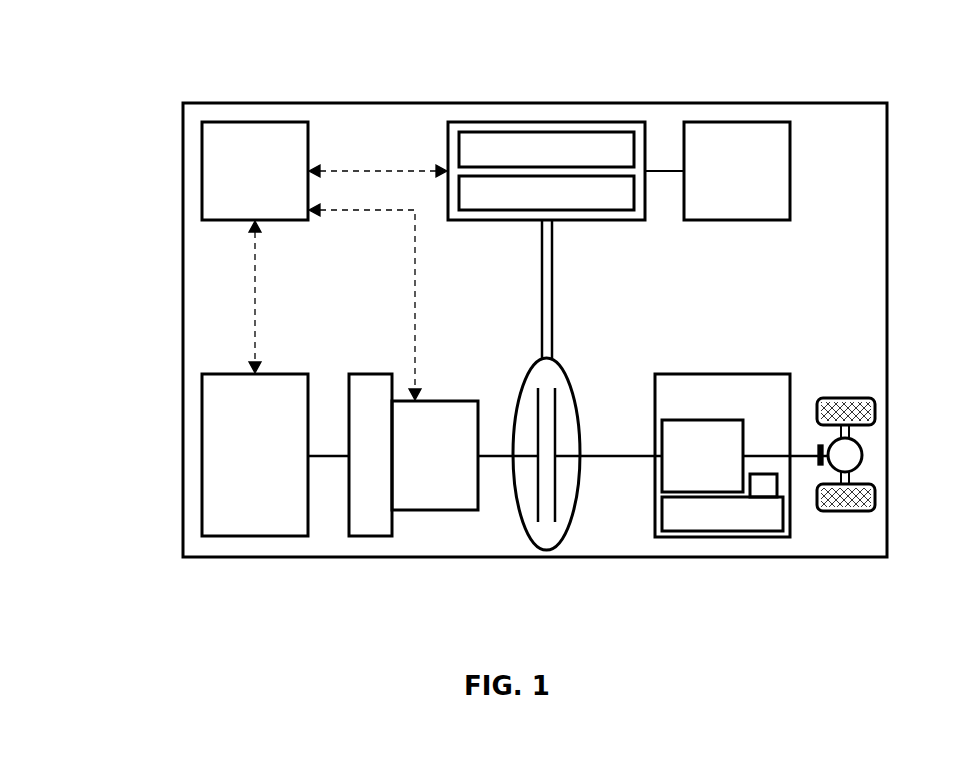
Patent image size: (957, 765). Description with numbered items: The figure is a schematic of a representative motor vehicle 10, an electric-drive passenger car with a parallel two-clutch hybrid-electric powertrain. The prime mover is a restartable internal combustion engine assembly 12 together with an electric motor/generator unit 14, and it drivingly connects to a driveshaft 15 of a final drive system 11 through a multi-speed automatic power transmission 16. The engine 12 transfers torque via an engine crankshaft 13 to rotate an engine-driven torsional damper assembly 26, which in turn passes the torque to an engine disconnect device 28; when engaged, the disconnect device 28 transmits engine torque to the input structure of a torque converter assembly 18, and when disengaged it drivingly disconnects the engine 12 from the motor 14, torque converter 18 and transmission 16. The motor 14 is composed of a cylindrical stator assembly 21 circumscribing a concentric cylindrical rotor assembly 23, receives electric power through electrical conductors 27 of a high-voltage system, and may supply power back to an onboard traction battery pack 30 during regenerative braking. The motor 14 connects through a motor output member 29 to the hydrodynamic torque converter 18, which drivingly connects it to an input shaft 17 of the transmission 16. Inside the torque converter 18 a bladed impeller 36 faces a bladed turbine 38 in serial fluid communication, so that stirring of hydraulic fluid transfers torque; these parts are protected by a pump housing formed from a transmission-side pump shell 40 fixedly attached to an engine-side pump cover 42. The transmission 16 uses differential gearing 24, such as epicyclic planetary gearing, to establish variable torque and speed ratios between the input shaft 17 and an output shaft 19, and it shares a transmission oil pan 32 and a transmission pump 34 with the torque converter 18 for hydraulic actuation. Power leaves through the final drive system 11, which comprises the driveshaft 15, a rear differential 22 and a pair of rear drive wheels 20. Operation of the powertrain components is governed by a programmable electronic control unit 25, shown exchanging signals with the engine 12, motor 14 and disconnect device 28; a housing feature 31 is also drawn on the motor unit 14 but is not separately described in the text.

The motor vehicle 10 is at (175, 88).
The final drive system 11 is at (882, 278).
The internal combustion engine assembly 12 is at (213, 374).
The engine crankshaft 13 is at (326, 456).
The electric motor/generator unit 14 is at (461, 122).
The driveshaft 15 is at (803, 456).
The multi-speed automatic power transmission 16 is at (661, 374).
The transmission input shaft 17 is at (610, 456).
The torque converter assembly 18 is at (578, 505).
The transmission output shaft 19 is at (754, 456).
The rear drive wheels 20 is at (840, 398).
The stator assembly 21 is at (459, 148).
The rear differential 22 is at (862, 452).
The rotor assembly 23 is at (459, 192).
The differential gearing 24 is at (702, 420).
The electronic control unit 25 is at (213, 122).
The torsional damper assembly 26 is at (384, 374).
The electrical conductors/cables 27 is at (656, 171).
The engine disconnect device 28 is at (448, 401).
The motor output member 29 is at (542, 250).
The traction battery pack 30 is at (712, 122).
The controller housing 31 is at (600, 220).
The transmission oil pan 32 is at (700, 512).
The transmission pump 34 is at (762, 483).
The bladed impeller 36 is at (532, 516).
The bladed turbine 38 is at (556, 516).
The pump shell 40 is at (579, 484).
The pump cover 42 is at (514, 505).